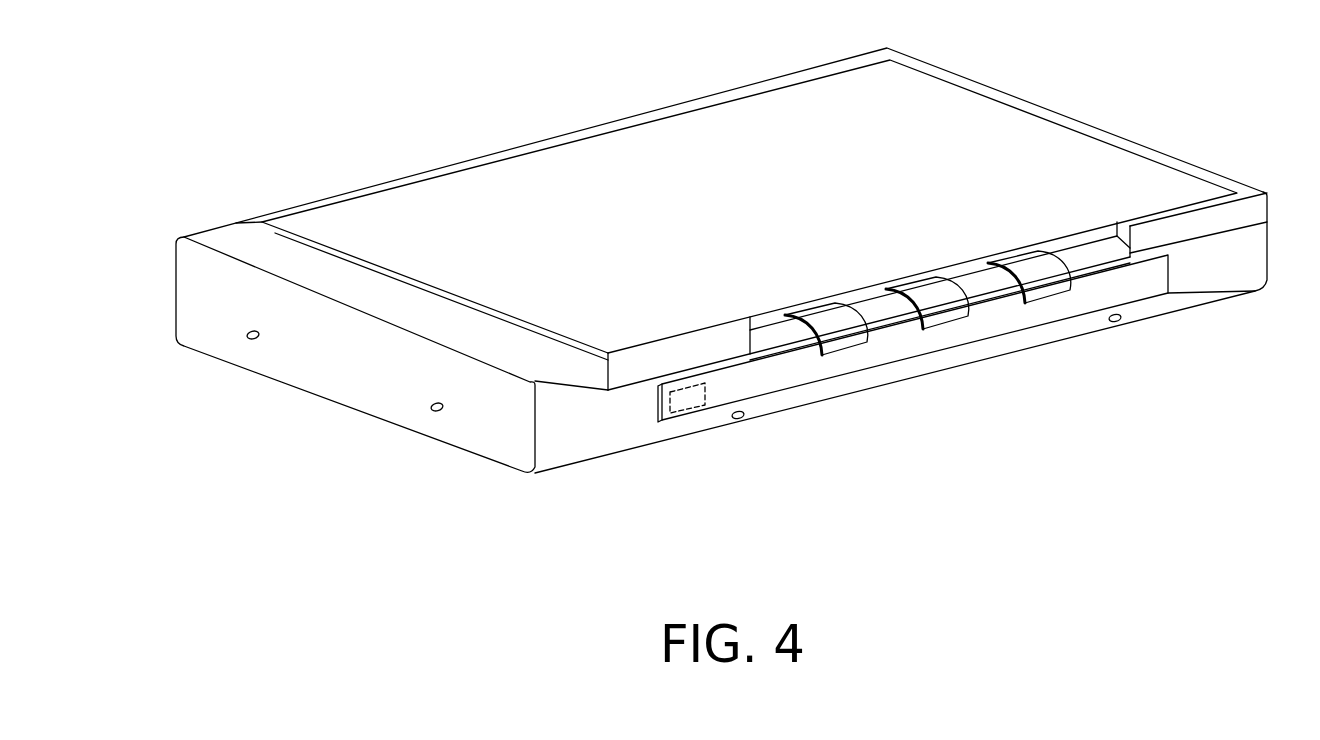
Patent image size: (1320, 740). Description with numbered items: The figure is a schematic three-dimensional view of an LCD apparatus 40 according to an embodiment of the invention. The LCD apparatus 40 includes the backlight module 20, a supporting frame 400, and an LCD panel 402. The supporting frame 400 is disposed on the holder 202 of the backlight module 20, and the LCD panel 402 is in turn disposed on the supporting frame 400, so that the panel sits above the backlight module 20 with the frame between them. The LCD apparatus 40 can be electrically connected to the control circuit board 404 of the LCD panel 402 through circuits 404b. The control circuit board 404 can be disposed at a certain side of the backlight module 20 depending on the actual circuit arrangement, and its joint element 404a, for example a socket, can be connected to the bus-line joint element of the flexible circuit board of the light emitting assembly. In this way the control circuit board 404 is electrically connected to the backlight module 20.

The backlight module 20 is at (721, 283).
The holder 202 is at (348, 392).
The LCD apparatus 40 is at (725, 274).
The supporting frame 400 is at (333, 196).
The LCD panel 402 is at (433, 205).
The control circuit board 404 is at (888, 368).
The joint element 404a is at (686, 406).
The circuits 404b is at (952, 318).